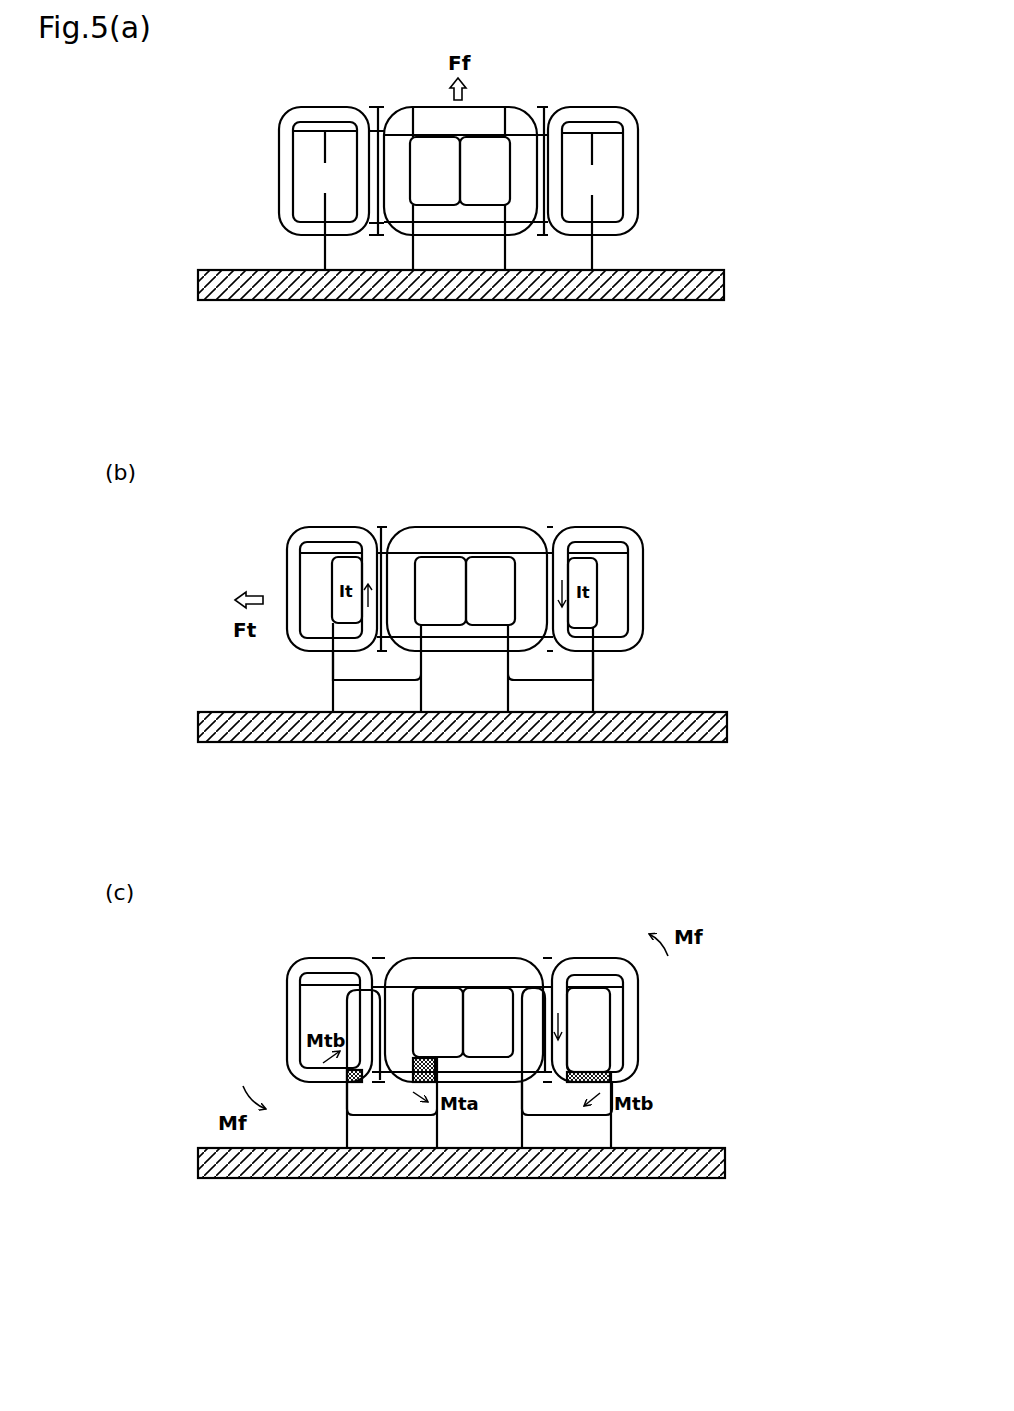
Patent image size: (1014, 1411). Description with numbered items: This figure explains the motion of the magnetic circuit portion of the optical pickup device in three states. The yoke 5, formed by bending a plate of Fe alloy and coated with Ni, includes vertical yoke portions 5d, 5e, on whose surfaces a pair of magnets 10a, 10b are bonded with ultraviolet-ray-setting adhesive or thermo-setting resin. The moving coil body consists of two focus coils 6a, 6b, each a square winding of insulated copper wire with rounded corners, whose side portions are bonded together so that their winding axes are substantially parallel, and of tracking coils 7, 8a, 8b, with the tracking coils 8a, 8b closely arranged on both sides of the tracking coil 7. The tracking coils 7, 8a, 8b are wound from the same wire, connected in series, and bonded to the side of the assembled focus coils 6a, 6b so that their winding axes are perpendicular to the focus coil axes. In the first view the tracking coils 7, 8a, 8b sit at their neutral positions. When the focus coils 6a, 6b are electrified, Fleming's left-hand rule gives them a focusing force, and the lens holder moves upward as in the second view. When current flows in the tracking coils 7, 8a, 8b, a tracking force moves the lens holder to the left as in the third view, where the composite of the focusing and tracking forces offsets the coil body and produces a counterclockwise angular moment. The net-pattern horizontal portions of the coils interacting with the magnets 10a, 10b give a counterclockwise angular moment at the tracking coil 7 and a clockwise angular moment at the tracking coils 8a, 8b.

The yoke 5 is at (660, 292).
The vertical yoke portion 5d is at (360, 250).
The vertical yoke portion 5e is at (567, 250).
The focus coil 6a is at (435, 195).
The focus coil 6b is at (482, 195).
The tracking coil 7 is at (398, 153).
The tracking coil 8a is at (286, 162).
The tracking coil 8b is at (628, 162).
The magnet 10a is at (380, 130).
The magnet 10b is at (542, 115).